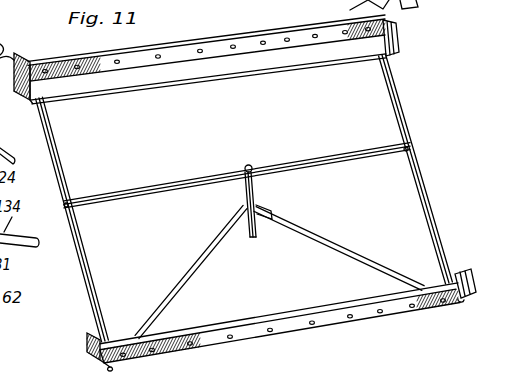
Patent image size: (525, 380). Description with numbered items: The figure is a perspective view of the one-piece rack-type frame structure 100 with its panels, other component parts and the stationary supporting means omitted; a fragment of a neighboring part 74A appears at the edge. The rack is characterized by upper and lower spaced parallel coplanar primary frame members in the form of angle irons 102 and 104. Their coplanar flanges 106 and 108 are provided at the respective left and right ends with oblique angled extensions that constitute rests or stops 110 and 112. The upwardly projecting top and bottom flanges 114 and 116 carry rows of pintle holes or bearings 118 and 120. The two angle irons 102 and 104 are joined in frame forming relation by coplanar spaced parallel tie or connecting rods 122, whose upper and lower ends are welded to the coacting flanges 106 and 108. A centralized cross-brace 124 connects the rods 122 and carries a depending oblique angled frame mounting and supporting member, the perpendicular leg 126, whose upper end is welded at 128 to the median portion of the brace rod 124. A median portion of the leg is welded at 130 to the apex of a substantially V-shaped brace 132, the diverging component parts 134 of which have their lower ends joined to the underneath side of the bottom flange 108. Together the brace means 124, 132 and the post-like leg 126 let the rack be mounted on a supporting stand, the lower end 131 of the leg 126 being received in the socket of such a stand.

The adjacent frame member 74A is at (388, 4).
The frame structure 100 is at (403, 82).
The upper angle iron 102 is at (199, 87).
The lower angle iron 104 is at (265, 313).
The flange of upper angle iron 106 is at (240, 64).
The bottom flange of lower angle iron 108 is at (222, 327).
The rest or stop 110 is at (391, 41).
The rest or stop 112 is at (465, 272).
The top flange 114 is at (213, 38).
The bottom flange 116 is at (251, 334).
The pintle holes 118 is at (315, 38).
The pintle holes 120 is at (348, 321).
The tie rods 122 is at (396, 109).
The cross-brace 124 is at (315, 163).
The perpendicular leg 126 is at (252, 195).
The weld 128 is at (243, 178).
The weld 130 is at (276, 218).
The lower end of leg 131 is at (251, 222).
The V-shaped brace 132 is at (390, 262).
The diverging component parts 134 is at (334, 243).